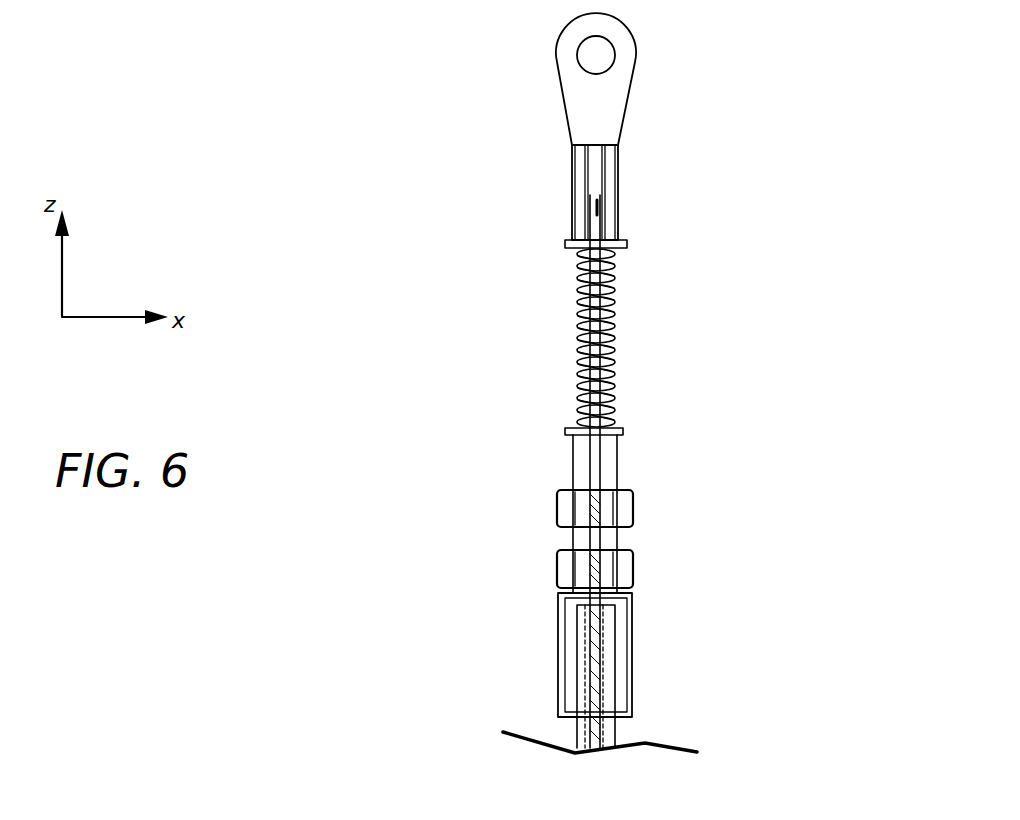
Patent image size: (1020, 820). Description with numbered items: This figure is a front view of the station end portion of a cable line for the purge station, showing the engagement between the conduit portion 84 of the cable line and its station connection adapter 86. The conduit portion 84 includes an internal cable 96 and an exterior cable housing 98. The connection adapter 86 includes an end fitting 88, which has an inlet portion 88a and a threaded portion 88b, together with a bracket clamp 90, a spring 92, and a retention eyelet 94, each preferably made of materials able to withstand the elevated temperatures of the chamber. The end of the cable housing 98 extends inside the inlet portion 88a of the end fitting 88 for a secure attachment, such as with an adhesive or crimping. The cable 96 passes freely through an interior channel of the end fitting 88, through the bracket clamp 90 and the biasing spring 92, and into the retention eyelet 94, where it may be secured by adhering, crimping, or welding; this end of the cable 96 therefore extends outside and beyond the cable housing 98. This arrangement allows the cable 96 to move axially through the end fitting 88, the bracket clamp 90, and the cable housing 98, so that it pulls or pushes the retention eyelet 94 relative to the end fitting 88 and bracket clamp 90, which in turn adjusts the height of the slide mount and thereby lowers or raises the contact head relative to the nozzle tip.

The conduit portion 84 is at (470, 748).
The station connection adapter 86 is at (370, 239).
The end fitting 88 is at (658, 617).
The inlet portion 88a is at (560, 620).
The threaded portion 88b is at (600, 452).
The bracket clamp 90 is at (565, 500).
The spring 92 is at (556, 329).
The retention eyelet 94 is at (608, 118).
The internal cable 96 is at (591, 212).
The exterior cable housing 98 is at (580, 670).